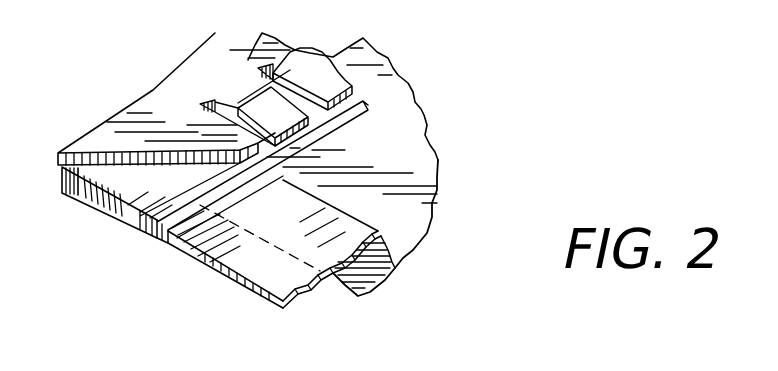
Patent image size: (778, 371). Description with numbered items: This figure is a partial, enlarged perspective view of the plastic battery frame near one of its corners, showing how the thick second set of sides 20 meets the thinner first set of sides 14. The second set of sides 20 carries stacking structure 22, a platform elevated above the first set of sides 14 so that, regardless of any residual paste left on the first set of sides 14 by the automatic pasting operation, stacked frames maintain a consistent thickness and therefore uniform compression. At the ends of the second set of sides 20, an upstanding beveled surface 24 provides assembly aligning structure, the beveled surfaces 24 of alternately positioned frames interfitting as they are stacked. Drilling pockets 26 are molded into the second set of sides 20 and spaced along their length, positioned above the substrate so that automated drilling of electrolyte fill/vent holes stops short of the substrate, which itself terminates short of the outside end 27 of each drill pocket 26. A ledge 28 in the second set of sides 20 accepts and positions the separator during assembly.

The first set of sides 14 is at (277, 277).
The second set of sides 20 is at (162, 95).
The stacking structure 22 is at (148, 188).
The upstanding beveled surface 24 is at (118, 165).
The drilling pockets 26 is at (290, 76).
The outside end of drill pocket 27 is at (268, 63).
The ledge 28 is at (307, 135).